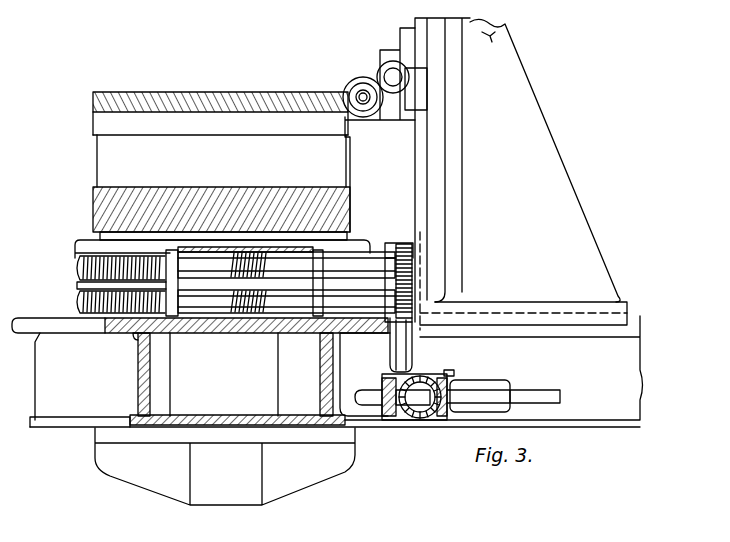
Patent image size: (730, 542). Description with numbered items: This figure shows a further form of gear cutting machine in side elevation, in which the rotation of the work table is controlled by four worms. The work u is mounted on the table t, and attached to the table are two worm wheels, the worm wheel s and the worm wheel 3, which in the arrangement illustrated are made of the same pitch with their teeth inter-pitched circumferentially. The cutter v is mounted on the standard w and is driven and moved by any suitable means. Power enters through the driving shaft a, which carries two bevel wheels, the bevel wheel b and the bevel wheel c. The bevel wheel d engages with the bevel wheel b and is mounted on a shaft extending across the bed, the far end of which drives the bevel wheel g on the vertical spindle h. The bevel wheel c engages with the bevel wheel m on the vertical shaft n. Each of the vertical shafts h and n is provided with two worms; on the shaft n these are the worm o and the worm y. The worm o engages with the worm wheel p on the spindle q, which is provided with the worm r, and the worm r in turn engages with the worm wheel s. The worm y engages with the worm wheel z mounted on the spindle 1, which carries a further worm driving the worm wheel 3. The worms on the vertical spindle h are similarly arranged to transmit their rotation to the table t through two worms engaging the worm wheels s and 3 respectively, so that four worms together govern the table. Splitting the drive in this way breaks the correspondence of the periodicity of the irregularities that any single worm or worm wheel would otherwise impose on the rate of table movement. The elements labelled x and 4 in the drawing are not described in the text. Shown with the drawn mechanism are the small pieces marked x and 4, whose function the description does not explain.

The work u is at (110, 162).
The table t is at (80, 252).
The worm wheel 3 is at (78, 264).
The worm wheel s is at (78, 298).
The top plate x is at (258, 262).
The worm r is at (235, 332).
The spindle q is at (322, 318).
The spindle 1 is at (325, 283).
The worm wheel z is at (396, 272).
The worm y is at (402, 243).
The cutter v is at (354, 80).
The standard w is at (336, 222).
The frame top 4 is at (495, 33).
The vertical shaft n is at (385, 365).
The worm wheel p is at (393, 330).
The worm o is at (401, 326).
The bevel wheel m is at (422, 376).
The vertical spindle h is at (452, 372).
The bevel wheel c is at (388, 418).
The bevel wheel d is at (418, 420).
The bevel wheel b is at (441, 420).
The bevel wheel g is at (478, 380).
The driving shaft a is at (536, 390).